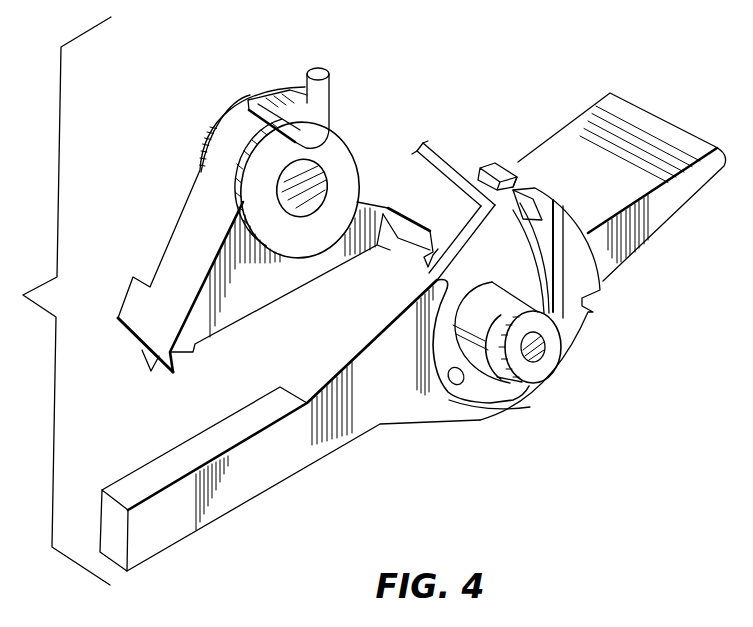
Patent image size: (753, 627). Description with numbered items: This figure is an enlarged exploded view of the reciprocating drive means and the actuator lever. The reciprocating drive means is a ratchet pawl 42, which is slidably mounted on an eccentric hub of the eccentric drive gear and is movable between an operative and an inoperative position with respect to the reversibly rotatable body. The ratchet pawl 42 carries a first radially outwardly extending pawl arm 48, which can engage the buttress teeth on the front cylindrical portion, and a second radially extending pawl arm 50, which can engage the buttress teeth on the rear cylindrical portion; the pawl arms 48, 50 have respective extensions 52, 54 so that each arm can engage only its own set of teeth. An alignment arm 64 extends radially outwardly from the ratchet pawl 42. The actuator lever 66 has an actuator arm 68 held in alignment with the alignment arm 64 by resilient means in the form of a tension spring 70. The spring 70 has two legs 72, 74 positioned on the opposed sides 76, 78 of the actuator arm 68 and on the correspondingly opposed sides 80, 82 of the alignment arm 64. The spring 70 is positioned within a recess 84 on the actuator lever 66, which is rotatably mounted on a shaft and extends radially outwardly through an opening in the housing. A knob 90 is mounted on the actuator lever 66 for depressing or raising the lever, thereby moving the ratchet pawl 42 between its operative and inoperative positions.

The ratchet pawl 42 is at (195, 190).
The second radially extending pawl arm 50 is at (152, 312).
The extension 54 is at (142, 352).
The alignment arm 64 is at (318, 68).
The side of alignment arm 80 is at (313, 98).
The side of alignment arm 82 is at (331, 86).
The first radially outwardly extending pawl arm 48 is at (390, 207).
The extension 52 is at (430, 228).
The spring leg 72 is at (417, 148).
The spring leg 74 is at (448, 152).
The side of actuator arm 76 is at (472, 216).
The actuator arm 68 is at (496, 166).
The side of actuator arm 78 is at (518, 176).
The knob 90 is at (655, 215).
The tension spring 70 is at (547, 284).
The recess 84 is at (508, 398).
The actuator lever 66 is at (384, 423).